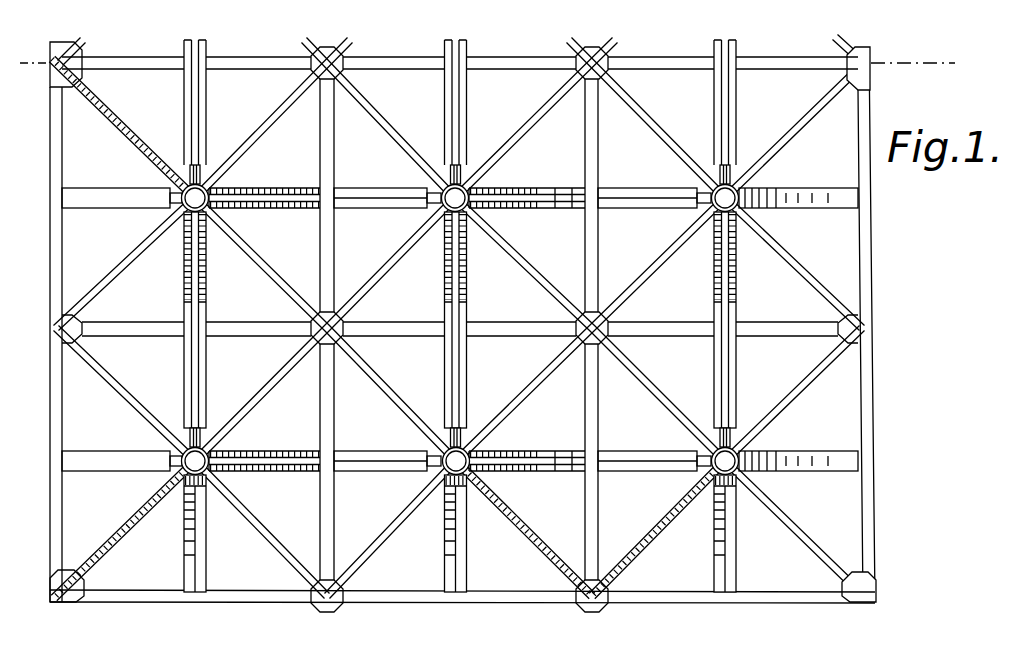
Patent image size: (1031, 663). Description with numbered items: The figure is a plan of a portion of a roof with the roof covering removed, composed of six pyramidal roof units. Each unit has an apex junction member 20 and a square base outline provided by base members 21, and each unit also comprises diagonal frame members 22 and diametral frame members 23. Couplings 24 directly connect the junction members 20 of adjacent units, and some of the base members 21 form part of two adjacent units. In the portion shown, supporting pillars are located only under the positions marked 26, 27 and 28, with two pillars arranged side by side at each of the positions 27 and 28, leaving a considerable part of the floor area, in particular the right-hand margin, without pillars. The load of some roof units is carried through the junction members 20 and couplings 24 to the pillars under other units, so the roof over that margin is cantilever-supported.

The apex junction member 20 is at (503, 440).
The base members 21 is at (155, 64).
The diagonal frame members 22 is at (294, 95).
The diametral frame members 23 is at (205, 84).
The couplings 24 is at (193, 118).
The pillar position 26 is at (67, 598).
The pillar position 27 is at (60, 62).
The pillar position 28 is at (602, 597).